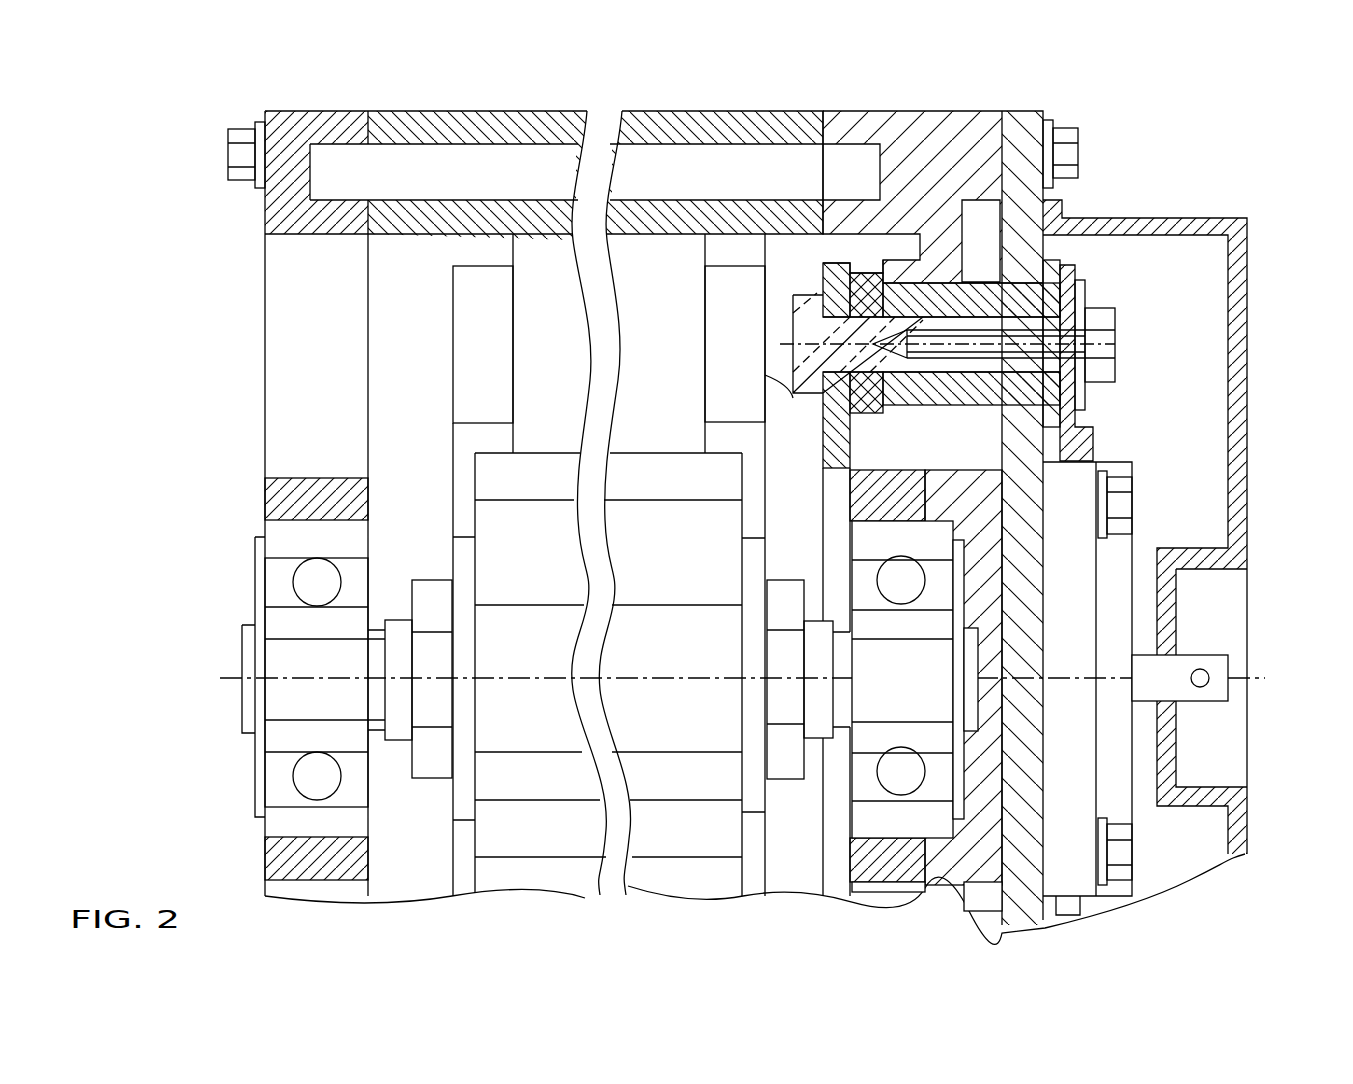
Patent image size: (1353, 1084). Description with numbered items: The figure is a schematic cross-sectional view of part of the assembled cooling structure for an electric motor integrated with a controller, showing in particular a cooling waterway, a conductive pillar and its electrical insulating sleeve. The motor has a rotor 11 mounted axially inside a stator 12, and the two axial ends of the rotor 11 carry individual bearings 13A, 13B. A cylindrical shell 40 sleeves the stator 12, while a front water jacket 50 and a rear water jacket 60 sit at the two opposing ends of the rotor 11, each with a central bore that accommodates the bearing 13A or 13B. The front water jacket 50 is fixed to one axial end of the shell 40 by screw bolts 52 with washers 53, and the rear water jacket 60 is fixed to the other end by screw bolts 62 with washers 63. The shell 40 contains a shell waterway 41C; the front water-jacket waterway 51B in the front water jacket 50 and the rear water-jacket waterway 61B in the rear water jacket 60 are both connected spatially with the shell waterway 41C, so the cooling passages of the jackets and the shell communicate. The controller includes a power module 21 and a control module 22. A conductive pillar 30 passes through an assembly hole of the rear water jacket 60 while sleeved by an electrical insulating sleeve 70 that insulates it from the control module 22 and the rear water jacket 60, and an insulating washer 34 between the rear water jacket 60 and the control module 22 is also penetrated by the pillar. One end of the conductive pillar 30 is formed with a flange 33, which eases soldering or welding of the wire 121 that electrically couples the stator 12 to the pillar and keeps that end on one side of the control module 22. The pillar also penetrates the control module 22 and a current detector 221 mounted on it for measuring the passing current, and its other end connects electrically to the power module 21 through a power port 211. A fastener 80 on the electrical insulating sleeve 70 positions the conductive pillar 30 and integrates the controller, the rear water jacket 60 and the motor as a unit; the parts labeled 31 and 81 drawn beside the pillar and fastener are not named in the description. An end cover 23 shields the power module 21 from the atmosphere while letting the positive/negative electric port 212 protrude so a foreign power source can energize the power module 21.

The rotor 11 is at (535, 878).
The stator 12 is at (458, 327).
The wire 121 is at (783, 385).
The bearing 13A is at (278, 777).
The bearing 13B is at (861, 779).
The power module 21 is at (1130, 465).
The power port 211 is at (1073, 263).
The positive/negative electric port 212 is at (1209, 655).
The control module 22 is at (833, 571).
The current detector 221 is at (857, 273).
The end cover 23 is at (1247, 382).
The conductive pillar 30 is at (838, 362).
The sleeve 31 is at (977, 357).
The flange 33 is at (797, 327).
The insulating washer 34 is at (895, 402).
The shell 40 is at (672, 105).
The shell waterway 41C is at (542, 160).
The front water jacket 50 is at (254, 366).
The front water-jacket waterway 51B is at (337, 160).
The screw bolt 52 is at (240, 155).
The washer 53 is at (258, 190).
The rear water jacket 60 is at (992, 101).
The rear water-jacket waterway 61B is at (848, 160).
The screw bolt 62 is at (1070, 155).
The washer 63 is at (1048, 122).
The electrical insulating sleeve 70 is at (938, 298).
The fastener 80 is at (1105, 345).
The washer 81 is at (1088, 393).